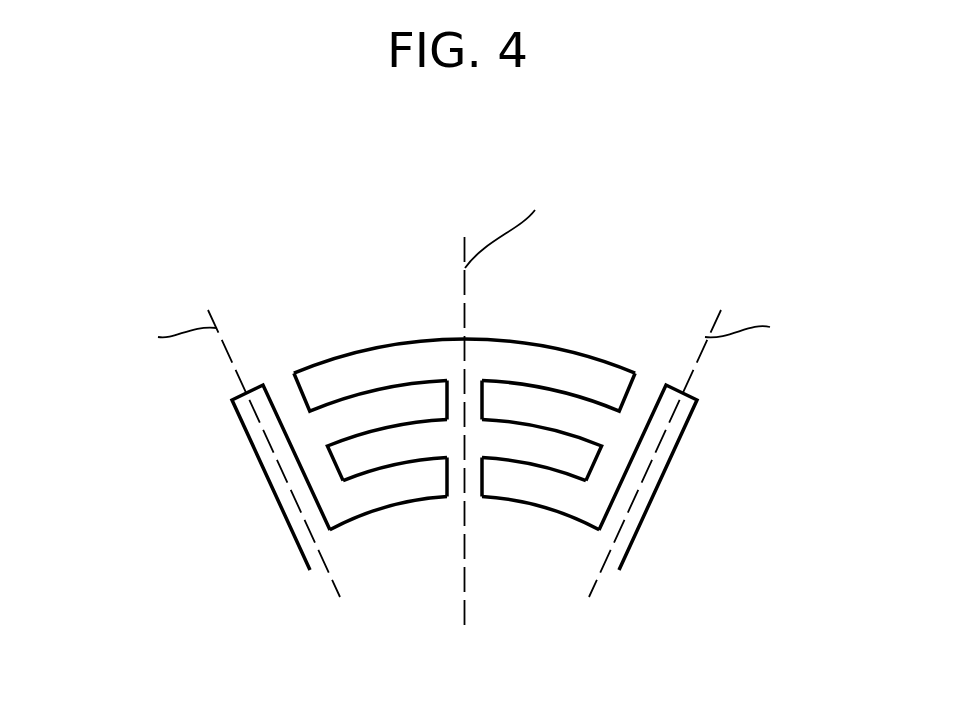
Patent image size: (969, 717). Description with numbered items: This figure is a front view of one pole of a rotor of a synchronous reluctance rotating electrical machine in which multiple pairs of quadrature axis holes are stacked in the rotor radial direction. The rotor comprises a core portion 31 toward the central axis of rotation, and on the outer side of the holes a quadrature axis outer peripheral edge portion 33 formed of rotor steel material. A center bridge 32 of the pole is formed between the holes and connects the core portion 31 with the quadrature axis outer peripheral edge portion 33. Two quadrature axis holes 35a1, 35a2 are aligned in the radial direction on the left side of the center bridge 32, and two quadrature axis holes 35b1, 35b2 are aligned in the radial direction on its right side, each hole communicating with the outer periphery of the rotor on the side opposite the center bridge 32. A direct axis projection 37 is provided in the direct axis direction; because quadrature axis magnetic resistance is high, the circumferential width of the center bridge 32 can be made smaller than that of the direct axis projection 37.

The core portion 31 is at (436, 688).
The center bridge 32 is at (457, 497).
The quadrature axis outer peripheral edge portion 33 is at (510, 360).
The quadrature axis hole 35a1 is at (412, 405).
The quadrature axis hole 35a2 is at (388, 493).
The quadrature axis hole 35b1 is at (555, 407).
The quadrature axis hole 35b2 is at (527, 490).
The direct axis projection 37 is at (233, 400).